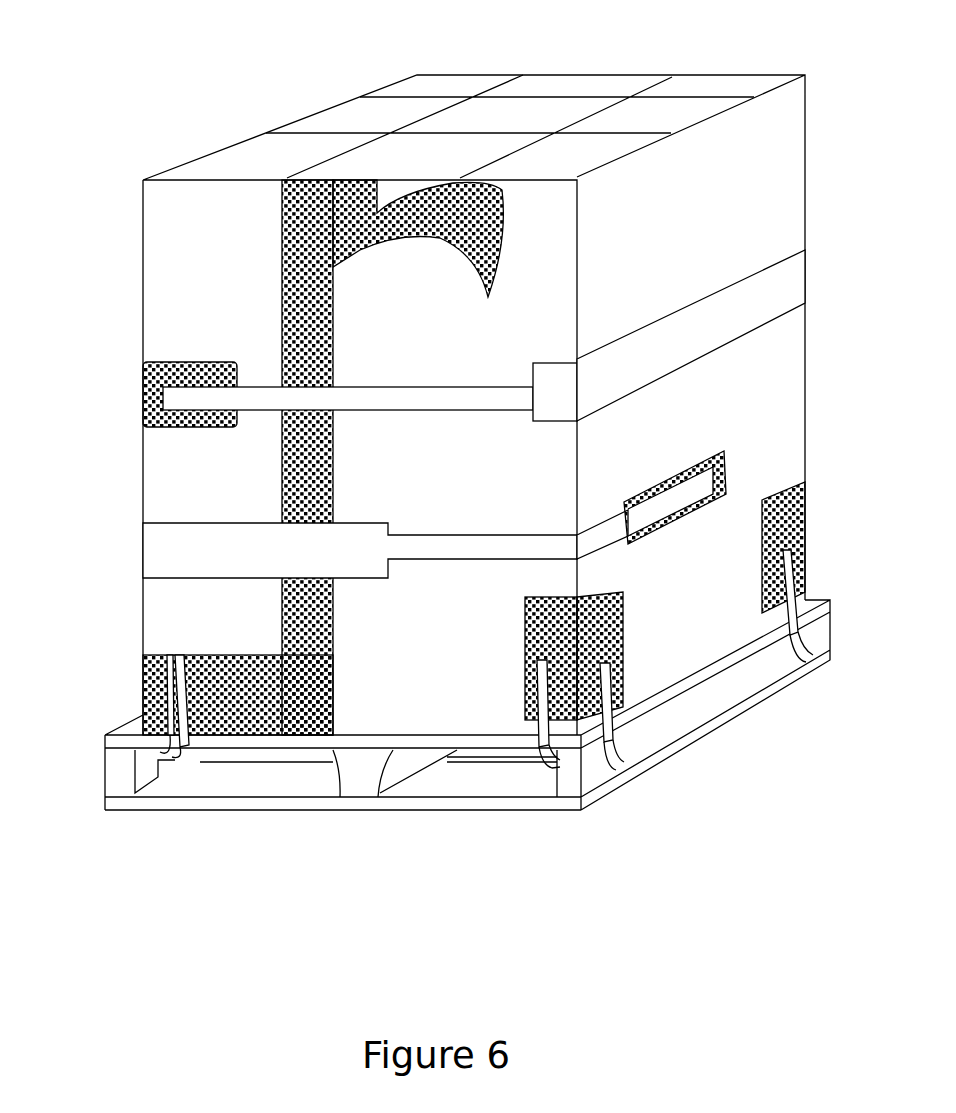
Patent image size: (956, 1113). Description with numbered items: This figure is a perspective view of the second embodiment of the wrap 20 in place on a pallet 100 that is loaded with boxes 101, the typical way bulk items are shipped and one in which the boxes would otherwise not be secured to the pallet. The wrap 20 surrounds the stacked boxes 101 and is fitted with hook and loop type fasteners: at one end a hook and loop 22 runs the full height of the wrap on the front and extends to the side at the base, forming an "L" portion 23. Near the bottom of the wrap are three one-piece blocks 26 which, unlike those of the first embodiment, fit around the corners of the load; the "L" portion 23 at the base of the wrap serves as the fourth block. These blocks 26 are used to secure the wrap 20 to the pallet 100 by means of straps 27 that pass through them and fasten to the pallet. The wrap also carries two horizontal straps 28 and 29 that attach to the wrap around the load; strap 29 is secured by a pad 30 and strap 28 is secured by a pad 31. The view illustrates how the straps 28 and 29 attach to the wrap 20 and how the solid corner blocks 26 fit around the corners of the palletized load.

The wrap 20 is at (148, 297).
The hook and loop 22 is at (282, 607).
The "L" portion 23 is at (162, 655).
The blocks 26 is at (525, 637).
The straps 27 is at (188, 747).
The strap 28 is at (367, 545).
The strap 29 is at (697, 318).
The pad 30 is at (230, 362).
The pad 31 is at (727, 455).
The pallet 100 is at (683, 712).
The boxes 101 is at (560, 97).